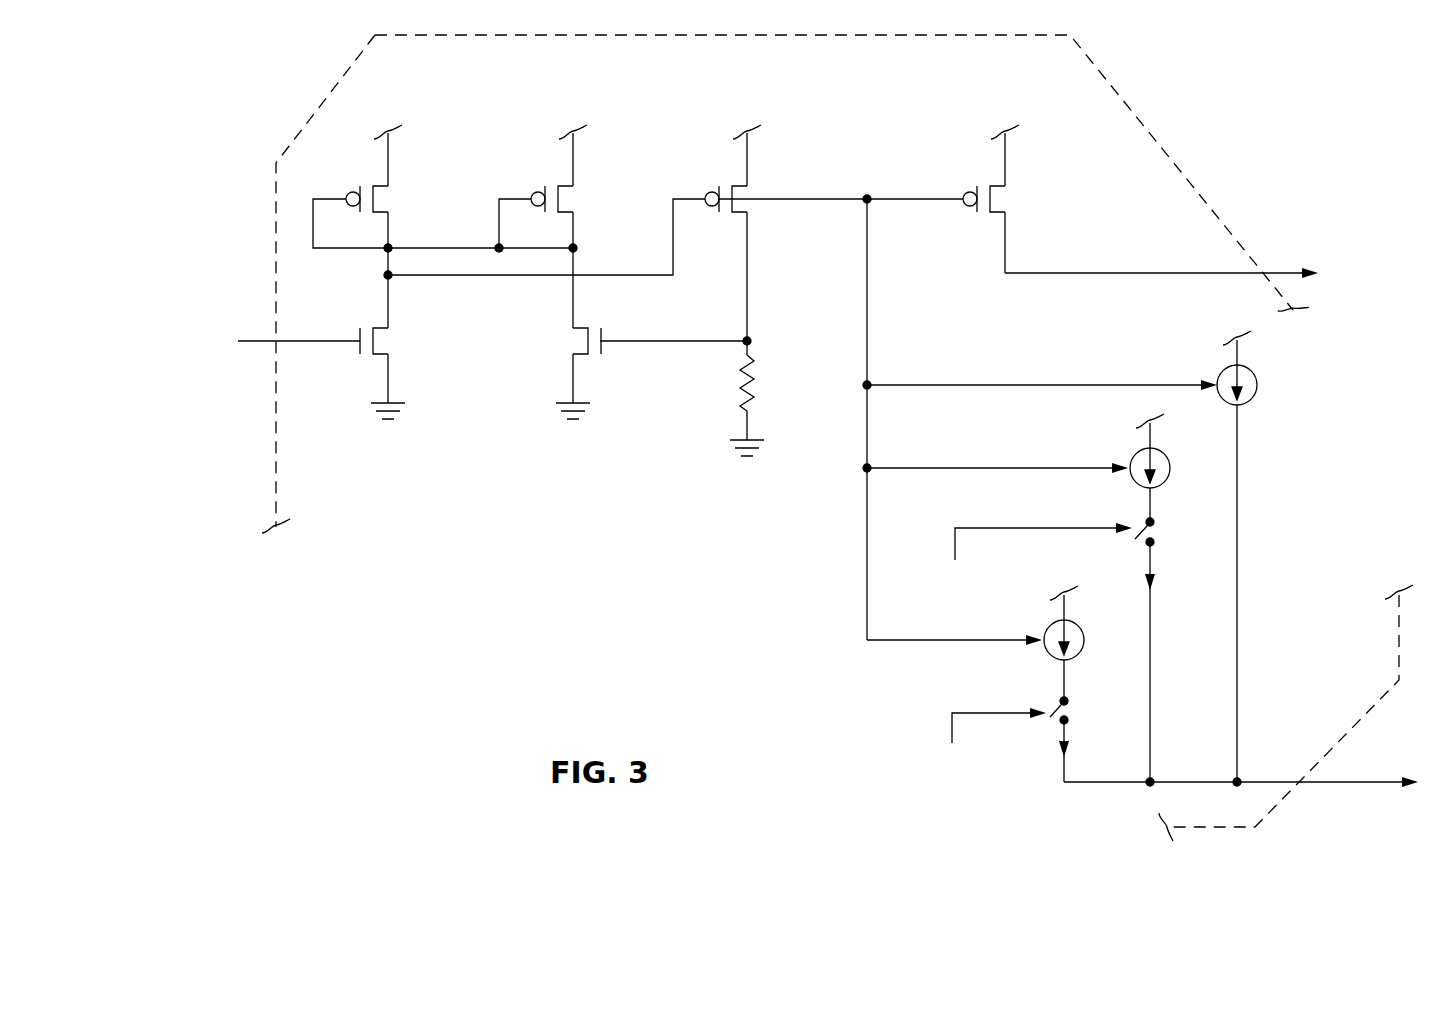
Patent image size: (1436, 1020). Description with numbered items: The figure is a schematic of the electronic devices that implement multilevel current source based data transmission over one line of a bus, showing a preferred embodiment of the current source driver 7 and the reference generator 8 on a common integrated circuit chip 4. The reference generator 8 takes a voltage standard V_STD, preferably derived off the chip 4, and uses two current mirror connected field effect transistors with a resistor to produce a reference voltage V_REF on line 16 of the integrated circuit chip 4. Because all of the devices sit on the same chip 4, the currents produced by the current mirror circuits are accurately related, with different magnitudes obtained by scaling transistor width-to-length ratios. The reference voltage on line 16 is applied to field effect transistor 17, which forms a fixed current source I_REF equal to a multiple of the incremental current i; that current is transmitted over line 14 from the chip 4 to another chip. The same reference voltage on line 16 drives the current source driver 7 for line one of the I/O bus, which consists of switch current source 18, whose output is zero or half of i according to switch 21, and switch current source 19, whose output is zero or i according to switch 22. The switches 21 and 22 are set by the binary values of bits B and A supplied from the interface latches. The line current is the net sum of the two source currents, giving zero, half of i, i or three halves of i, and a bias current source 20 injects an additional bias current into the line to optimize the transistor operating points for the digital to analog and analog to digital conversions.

The integrated circuit chip 4 is at (344, 74).
The reference generator 8 is at (465, 458).
The line 16 is at (867, 307).
The field effect transistor 17 is at (1012, 199).
The line 14 is at (1280, 273).
The bias current source 20 is at (1293, 397).
The switch current source 19 is at (1171, 466).
The switch 22 is at (1157, 531).
The switch current source 18 is at (1078, 630).
The switch 21 is at (1072, 710).
The current source driver 7 is at (826, 626).